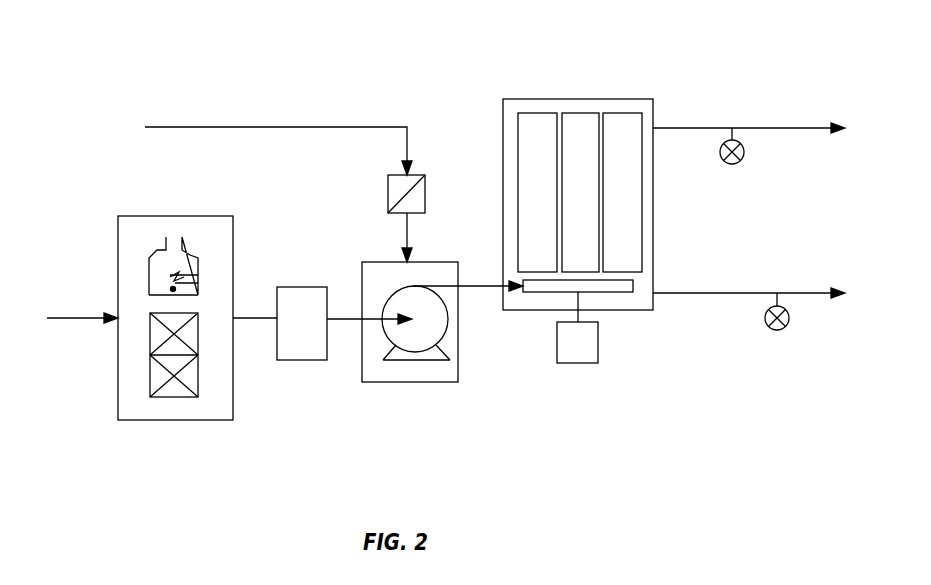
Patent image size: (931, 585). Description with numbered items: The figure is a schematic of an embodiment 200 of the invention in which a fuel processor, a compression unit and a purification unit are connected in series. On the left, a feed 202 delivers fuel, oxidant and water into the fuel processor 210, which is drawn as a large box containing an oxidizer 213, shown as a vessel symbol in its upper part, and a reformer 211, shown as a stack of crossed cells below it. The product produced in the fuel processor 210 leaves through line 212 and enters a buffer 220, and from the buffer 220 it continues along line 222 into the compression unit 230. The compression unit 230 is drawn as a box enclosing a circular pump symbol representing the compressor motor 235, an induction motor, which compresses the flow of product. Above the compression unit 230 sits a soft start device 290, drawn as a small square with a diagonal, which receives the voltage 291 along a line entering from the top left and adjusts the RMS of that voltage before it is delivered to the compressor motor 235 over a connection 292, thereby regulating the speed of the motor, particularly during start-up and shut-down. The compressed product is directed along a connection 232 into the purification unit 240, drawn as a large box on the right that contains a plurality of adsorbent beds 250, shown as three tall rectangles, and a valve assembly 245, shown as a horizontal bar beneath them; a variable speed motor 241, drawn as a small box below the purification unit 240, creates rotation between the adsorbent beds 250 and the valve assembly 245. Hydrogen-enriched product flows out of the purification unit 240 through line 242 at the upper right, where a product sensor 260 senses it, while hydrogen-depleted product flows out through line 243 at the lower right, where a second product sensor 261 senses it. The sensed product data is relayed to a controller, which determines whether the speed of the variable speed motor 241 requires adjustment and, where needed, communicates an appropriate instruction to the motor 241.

The embodiment 200 is at (128, 56).
The feed 202 is at (80, 318).
The fuel processor 210 is at (197, 412).
The reformer 211 is at (188, 380).
The line 212 is at (238, 320).
The oxidizer 213 is at (188, 258).
The buffer 220 is at (321, 334).
The line 222 is at (345, 318).
The compression unit 230 is at (433, 382).
The pressurized stream 232 is at (487, 286).
The compressor motor 235 is at (438, 333).
The purification unit 240 is at (503, 140).
The variable speed motor 241 is at (597, 354).
The line 242 is at (683, 128).
The line 243 is at (795, 293).
The valve assembly 245 is at (605, 290).
The adsorbent beds 250 is at (578, 120).
The product sensor 260 is at (744, 156).
The product sensor 261 is at (789, 322).
The soft start device 290 is at (388, 185).
The voltage 291 is at (235, 127).
The dosing stream 292 is at (406, 240).